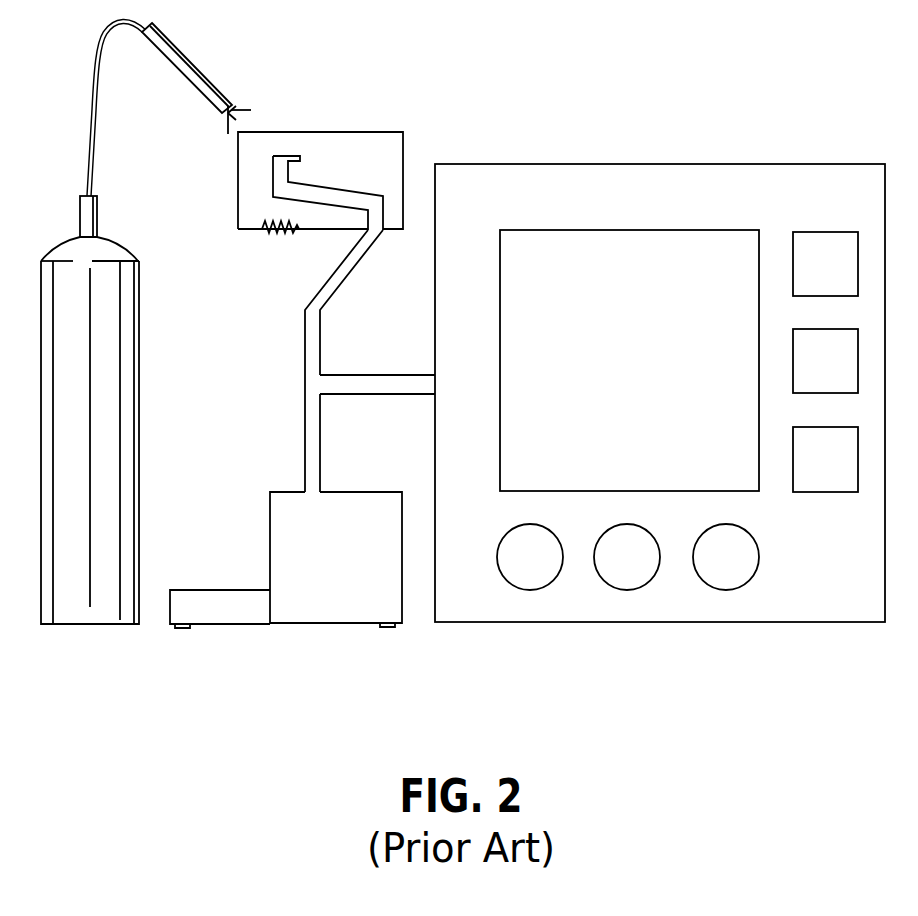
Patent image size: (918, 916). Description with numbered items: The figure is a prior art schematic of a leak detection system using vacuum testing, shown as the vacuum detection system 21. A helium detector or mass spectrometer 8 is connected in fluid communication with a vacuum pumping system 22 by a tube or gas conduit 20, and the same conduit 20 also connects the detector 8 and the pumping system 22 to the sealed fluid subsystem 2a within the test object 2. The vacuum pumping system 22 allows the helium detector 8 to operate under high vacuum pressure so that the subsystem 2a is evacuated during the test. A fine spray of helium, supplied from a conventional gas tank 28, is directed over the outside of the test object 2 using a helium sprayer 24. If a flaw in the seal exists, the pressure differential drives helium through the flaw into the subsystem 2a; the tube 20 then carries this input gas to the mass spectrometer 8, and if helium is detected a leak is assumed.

The test object 2 is at (372, 131).
The subsystem 2a is at (351, 189).
The helium detector or mass spectrometer 8 is at (517, 163).
The tube or gas conduit 20 is at (388, 376).
The vacuum detection system 21 is at (730, 121).
The vacuum pumping system 22 is at (388, 491).
The helium sprayer 24 is at (207, 72).
The gas tank 28 is at (137, 258).